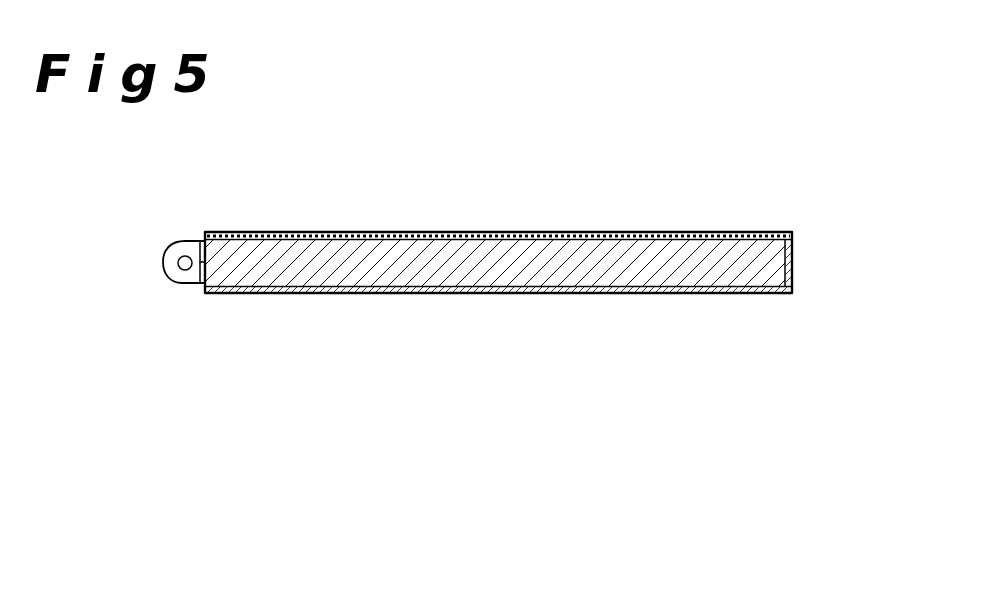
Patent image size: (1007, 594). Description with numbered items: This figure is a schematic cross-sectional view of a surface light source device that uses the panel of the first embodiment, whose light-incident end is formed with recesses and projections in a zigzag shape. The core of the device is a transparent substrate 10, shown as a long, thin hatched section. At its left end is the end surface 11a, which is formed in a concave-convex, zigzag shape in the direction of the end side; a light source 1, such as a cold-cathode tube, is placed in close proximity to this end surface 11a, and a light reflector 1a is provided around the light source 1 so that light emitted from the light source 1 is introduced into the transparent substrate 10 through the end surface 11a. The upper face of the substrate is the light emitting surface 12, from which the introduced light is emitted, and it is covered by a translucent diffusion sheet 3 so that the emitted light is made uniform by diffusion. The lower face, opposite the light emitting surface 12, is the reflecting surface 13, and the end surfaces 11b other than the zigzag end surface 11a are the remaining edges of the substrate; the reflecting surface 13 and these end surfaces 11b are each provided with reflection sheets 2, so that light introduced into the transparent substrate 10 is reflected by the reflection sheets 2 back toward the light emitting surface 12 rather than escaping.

The light source 1 is at (176, 279).
The light reflector 1a is at (178, 262).
The reflection sheet 2 is at (792, 264).
The translucent diffusion sheet 3 is at (497, 232).
The transparent substrate 10 is at (357, 255).
The end surface 11a is at (207, 262).
The end surfaces 11b is at (780, 260).
The light emitting surface 12 is at (668, 258).
The reflecting surface 13 is at (473, 291).